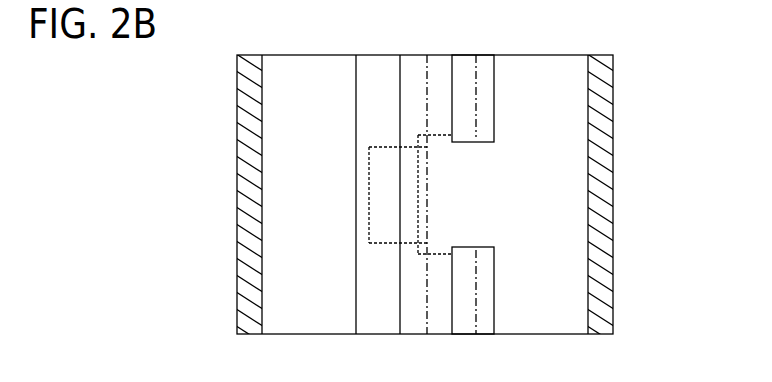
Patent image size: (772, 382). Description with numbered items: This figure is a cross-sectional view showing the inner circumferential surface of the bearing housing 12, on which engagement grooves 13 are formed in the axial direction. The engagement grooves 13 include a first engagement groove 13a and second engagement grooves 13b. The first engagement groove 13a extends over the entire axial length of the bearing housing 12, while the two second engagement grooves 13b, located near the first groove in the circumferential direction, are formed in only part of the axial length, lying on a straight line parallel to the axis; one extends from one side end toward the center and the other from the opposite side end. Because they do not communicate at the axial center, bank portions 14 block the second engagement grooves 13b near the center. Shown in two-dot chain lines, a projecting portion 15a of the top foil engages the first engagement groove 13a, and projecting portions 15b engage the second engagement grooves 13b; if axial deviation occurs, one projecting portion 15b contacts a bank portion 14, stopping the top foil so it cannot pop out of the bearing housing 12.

The bearing housing 12 is at (622, 113).
The engagement grooves 13 is at (452, 191).
The first engagement groove 13a is at (356, 93).
The second engagement groove 13b is at (452, 90).
The bank portion 14 is at (465, 138).
The projecting portion 15a is at (385, 195).
The projecting portion 15b is at (460, 105).